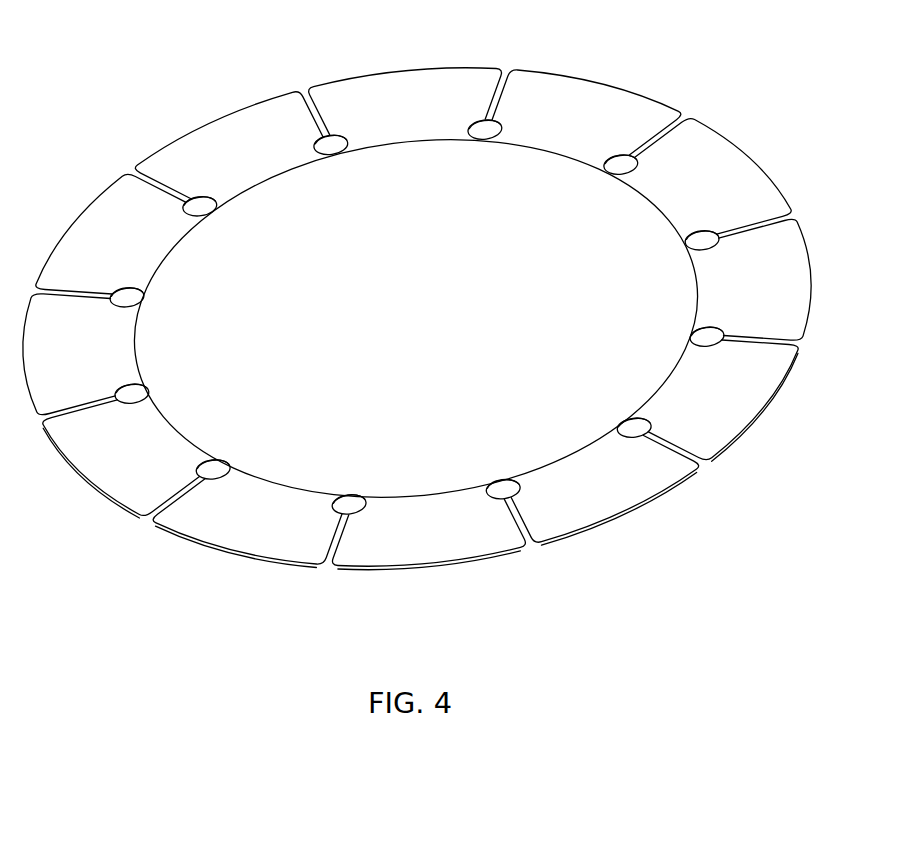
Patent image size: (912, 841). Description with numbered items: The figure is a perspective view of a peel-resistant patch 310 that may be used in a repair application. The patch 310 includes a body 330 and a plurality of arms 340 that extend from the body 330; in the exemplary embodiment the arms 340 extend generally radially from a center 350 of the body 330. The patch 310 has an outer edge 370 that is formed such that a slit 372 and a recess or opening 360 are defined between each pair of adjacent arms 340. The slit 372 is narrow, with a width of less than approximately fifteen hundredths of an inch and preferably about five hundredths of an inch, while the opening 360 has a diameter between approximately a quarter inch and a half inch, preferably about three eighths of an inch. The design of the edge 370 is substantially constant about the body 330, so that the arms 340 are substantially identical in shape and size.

The patch 310 is at (417, 325).
The body 330 is at (531, 354).
The arms 340 is at (641, 120).
The center 350 is at (425, 305).
The opening 360 is at (213, 214).
The outer edge 370 is at (537, 70).
The slit 372 is at (170, 179).